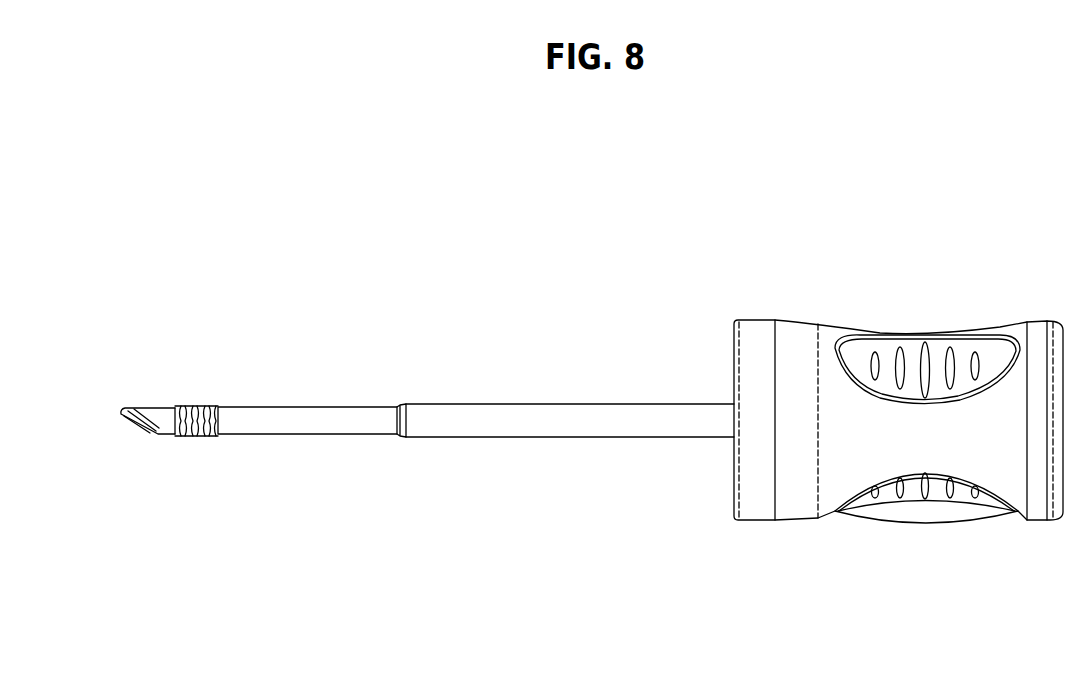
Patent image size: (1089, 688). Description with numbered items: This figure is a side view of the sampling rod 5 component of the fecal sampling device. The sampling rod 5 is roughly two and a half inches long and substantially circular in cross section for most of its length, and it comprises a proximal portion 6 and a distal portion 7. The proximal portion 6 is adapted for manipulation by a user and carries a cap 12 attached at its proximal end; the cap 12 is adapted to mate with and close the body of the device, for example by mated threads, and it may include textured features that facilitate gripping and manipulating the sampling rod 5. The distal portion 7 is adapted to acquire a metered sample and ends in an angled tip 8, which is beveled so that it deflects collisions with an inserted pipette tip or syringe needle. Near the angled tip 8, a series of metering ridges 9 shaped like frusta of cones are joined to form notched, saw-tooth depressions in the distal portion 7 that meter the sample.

The sampling rod 5 is at (420, 390).
The proximal portion 6 is at (545, 450).
The distal portion 7 is at (290, 395).
The angled tip 8 is at (140, 450).
The metering ridge 9 is at (195, 404).
The cap 12 is at (879, 315).